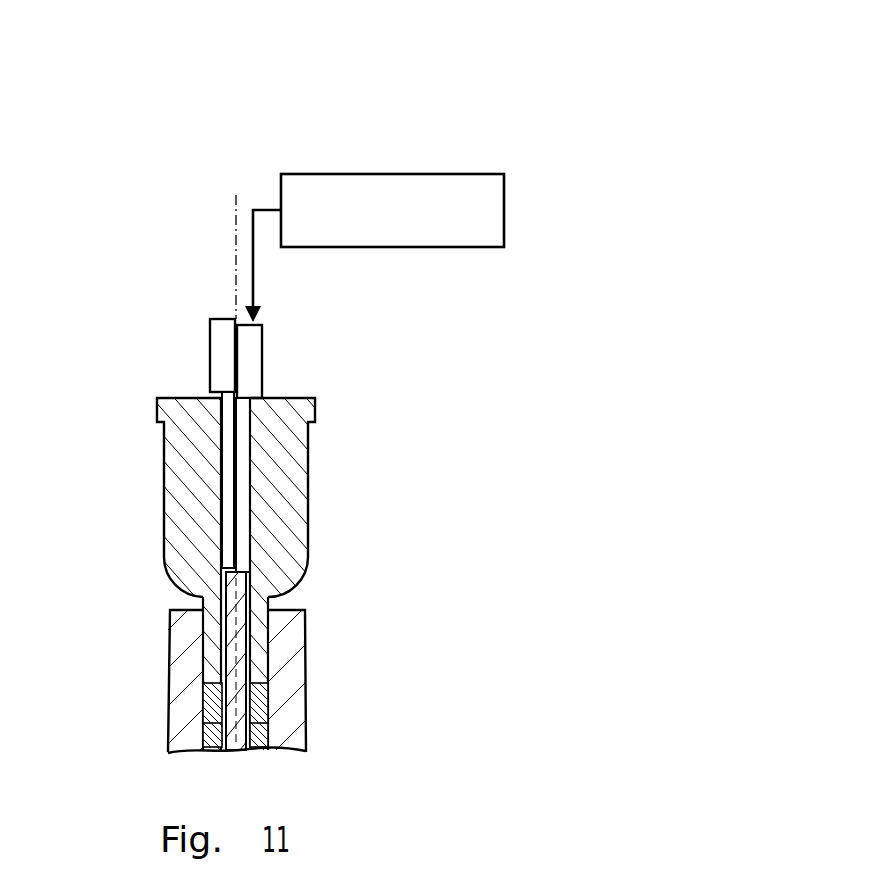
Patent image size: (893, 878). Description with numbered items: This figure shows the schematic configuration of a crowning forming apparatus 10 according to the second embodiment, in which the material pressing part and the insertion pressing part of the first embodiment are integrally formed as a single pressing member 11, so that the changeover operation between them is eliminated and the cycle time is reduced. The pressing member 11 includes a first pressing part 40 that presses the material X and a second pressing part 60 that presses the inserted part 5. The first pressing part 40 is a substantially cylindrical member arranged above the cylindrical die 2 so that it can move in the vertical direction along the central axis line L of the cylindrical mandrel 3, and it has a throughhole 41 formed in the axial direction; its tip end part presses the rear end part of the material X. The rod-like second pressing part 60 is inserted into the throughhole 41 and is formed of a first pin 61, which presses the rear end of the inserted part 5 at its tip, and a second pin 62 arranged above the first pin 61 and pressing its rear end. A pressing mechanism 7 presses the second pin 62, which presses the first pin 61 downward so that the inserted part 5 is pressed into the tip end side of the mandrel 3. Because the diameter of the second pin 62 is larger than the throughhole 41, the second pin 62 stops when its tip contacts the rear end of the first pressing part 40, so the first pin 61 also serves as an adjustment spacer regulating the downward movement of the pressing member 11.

The crowning forming apparatus 10 is at (396, 121).
The pressing member 11 is at (97, 300).
The pressing mechanism 7 is at (504, 206).
The second pressing part 60 is at (105, 325).
The second pin 62 is at (210, 341).
The first pin 61 is at (222, 397).
The first pressing part 40 is at (164, 446).
The throughhole 41 is at (223, 455).
The cylindrical mandrel 3 is at (210, 603).
The inserted part 5 is at (220, 557).
The cylindrical die 2 is at (178, 642).
The material X is at (205, 705).
The central axis line L is at (234, 245).